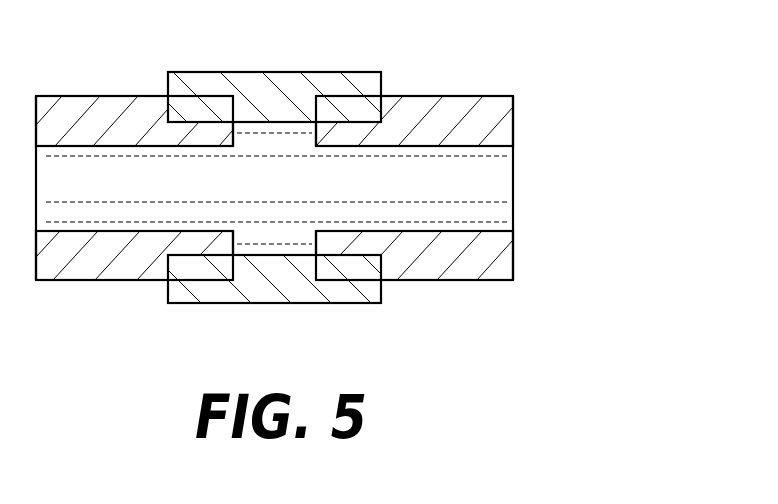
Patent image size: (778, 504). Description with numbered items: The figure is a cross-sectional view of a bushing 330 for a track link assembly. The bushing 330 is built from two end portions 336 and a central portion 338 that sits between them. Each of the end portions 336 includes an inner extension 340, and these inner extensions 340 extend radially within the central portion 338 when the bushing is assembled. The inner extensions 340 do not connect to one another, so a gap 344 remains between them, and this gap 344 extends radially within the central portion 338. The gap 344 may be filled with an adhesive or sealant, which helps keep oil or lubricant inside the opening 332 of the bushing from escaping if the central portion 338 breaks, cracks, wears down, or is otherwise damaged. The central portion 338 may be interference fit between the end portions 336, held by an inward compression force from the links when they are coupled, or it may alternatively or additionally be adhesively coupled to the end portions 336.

The bushing 330 is at (594, 135).
The opening 332 is at (497, 183).
The end portions 336 is at (80, 96).
The central portion 338 is at (309, 72).
The inner extensions 340 is at (209, 130).
The gap 344 is at (262, 224).